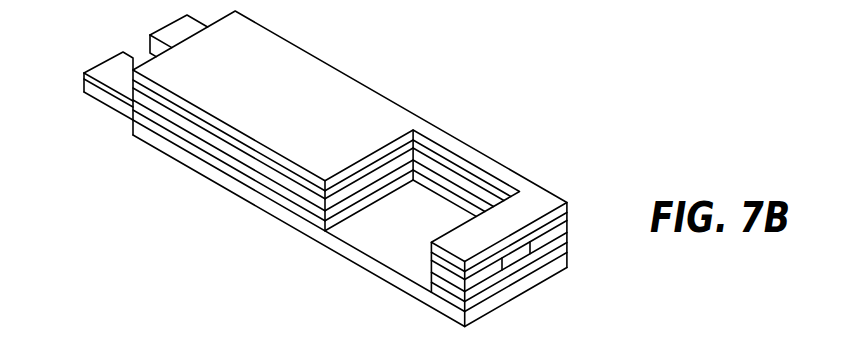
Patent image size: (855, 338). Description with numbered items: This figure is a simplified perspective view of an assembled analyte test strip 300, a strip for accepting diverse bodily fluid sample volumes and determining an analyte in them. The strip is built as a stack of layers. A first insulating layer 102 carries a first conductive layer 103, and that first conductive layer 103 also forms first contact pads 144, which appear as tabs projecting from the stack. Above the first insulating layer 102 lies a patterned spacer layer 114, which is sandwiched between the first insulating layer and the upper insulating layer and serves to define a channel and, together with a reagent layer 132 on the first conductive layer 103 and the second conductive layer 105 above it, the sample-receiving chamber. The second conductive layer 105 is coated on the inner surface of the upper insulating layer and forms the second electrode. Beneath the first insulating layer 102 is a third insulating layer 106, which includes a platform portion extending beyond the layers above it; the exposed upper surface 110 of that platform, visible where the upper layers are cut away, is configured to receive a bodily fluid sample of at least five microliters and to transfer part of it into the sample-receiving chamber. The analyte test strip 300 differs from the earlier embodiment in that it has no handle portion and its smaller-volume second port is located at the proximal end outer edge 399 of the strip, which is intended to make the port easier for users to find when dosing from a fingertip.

The analyte test strip 300 is at (510, 96).
The first contact pads 144 is at (177, 32).
The patterned spacer layer 114 is at (177, 121).
The first insulating layer 102 is at (213, 162).
The third insulating layer 106 is at (270, 208).
The upper surface 110 is at (368, 230).
The second conductive layer 105 is at (567, 218).
The first conductive layer 103 is at (568, 240).
The reagent layer 132 is at (517, 257).
The proximal end outer edge 399 is at (526, 301).